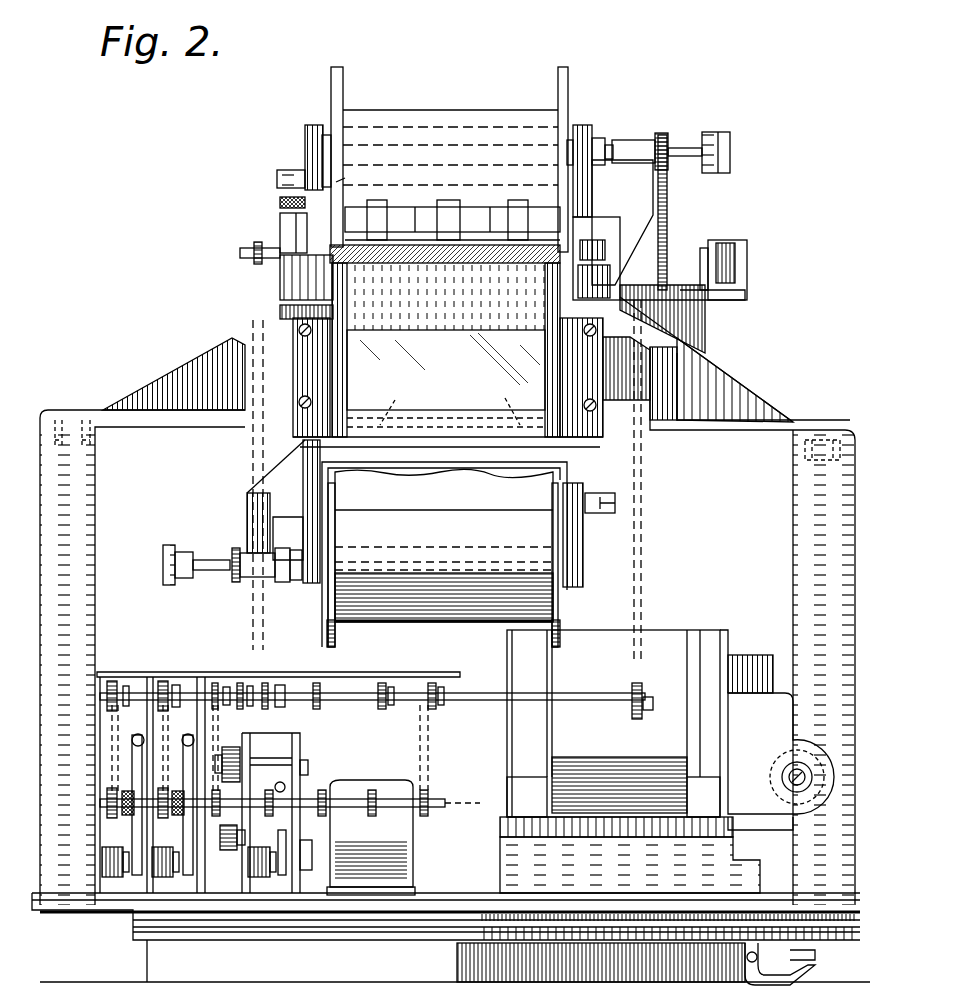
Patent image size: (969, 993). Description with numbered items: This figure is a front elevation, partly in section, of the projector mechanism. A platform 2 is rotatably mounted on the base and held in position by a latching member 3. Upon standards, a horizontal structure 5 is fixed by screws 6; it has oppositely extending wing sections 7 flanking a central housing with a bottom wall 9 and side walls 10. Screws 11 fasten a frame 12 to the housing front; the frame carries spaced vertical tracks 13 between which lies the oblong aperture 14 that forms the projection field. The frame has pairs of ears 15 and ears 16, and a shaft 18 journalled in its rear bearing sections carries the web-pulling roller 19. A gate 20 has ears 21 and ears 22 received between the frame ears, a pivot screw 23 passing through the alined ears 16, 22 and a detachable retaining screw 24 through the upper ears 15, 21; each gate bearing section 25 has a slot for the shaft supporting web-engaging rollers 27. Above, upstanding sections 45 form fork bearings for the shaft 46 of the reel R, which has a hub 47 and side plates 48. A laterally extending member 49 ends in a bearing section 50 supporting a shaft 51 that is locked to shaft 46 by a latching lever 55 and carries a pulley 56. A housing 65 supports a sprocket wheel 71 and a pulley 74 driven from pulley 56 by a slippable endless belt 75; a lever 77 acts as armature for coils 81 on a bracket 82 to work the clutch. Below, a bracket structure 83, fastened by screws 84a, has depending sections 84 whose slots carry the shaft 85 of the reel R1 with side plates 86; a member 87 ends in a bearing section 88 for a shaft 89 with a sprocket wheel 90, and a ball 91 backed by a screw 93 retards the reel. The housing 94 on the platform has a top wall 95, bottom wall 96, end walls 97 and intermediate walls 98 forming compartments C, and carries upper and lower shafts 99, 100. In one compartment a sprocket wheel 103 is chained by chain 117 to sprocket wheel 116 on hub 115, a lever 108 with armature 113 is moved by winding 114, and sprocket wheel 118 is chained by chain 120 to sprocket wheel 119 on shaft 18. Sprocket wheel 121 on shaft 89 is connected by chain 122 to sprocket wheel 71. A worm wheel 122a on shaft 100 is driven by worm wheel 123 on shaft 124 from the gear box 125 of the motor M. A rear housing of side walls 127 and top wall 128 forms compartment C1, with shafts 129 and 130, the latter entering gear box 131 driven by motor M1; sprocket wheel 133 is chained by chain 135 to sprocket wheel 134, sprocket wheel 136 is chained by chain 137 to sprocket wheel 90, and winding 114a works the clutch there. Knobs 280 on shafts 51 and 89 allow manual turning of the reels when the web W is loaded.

The platform 2 is at (44, 912).
The latching member 3 is at (795, 945).
The horizontal structure 5 is at (745, 371).
The screws 6 is at (88, 452).
The wing sections 7 is at (142, 410).
The bottom wall 9 is at (445, 428).
The side walls 10 is at (300, 411).
The screws 11 is at (304, 396).
The frame 12 is at (590, 440).
The vertical tracks 13 is at (333, 385).
The aperture or passage 14 is at (430, 330).
The ears 15 is at (282, 213).
The ears 16 is at (558, 318).
The horizontal shaft 18 is at (242, 254).
The web-pulling roller 19 is at (480, 265).
The gate 20 is at (342, 294).
The ears 21 is at (282, 262).
The ears 22 is at (614, 250).
The pivot screw 23 is at (612, 268).
The retaining screw 24 is at (278, 222).
The bearing section 25 is at (392, 202).
The web-engaging rollers 27 is at (445, 202).
The upstanding sections 45 is at (314, 126).
The shaft 46 is at (480, 128).
The hub 47 is at (415, 108).
The side plates 48 is at (345, 61).
The laterally extending member 49 is at (630, 190).
The bearing section 50 is at (640, 142).
The shaft 51 is at (705, 152).
The latching lever 55 is at (632, 142).
The pulley 56 is at (668, 150).
The housing 65 is at (708, 328).
The sprocket wheel 71 is at (626, 379).
The pulley 74 is at (690, 362).
The endless belt 75 is at (668, 192).
The lever 77 is at (690, 280).
The coils 81 is at (748, 250).
The bracket 82 is at (752, 296).
The bracket structure 83 is at (287, 459).
The depending sections 84 is at (307, 586).
The screws 84a is at (451, 403).
The shaft 85 is at (448, 562).
The side plates 86 is at (346, 647).
The laterally extending member 87 is at (246, 520).
The bearing section 88 is at (264, 600).
The shaft 89 is at (205, 552).
The sprocket wheel 90 is at (232, 548).
The metallic ball 91 is at (336, 182).
The screw 93 is at (280, 178).
The housing 94 is at (146, 659).
The top wall 95 is at (185, 632).
The bottom wall 96 is at (130, 898).
The end walls 97 is at (98, 740).
The intermediate vertical walls 98 is at (195, 650).
The upper horizontal shaft 99 is at (466, 692).
The lower horizontal shaft 100 is at (443, 807).
The sprocket wheel 103 is at (420, 793).
The lever 108 is at (318, 840).
The armature 113 is at (275, 882).
The electromagnetic winding 114 is at (106, 880).
The electromagnetic winding 114a is at (265, 880).
The hub 115 is at (432, 700).
The sprocket wheel 116 is at (388, 690).
The endless sprocket chain 117 is at (430, 752).
The sprocket wheel 118 is at (335, 690).
The sprocket wheel 119 is at (255, 245).
The endless sprocket chain 120 is at (250, 286).
The sprocket wheel 121 is at (632, 700).
The endless sprocket chain 122 is at (645, 572).
The worm wheel 122a is at (790, 832).
The worm wheel 123 is at (781, 753).
The shaft 124 is at (798, 768).
The gear box 125 is at (757, 656).
The side walls 127 is at (298, 890).
The top wall 128 is at (300, 742).
The upper shaft 129 is at (278, 748).
The lower shaft 130 is at (252, 885).
The gear box 131 is at (318, 852).
The sprocket wheel 133 is at (236, 810).
The sprocket wheel 134 is at (224, 752).
The endless sprocket chain 135 is at (226, 840).
The sprocket wheel 136 is at (231, 749).
The endless sprocket chain 137 is at (233, 602).
The knob 280 is at (732, 156).
The housing A is at (78, 578).
The compartments C is at (188, 888).
The compartment C1 is at (302, 750).
The electrical motor M is at (690, 630).
The electrical motor M1 is at (393, 837).
The reel R is at (580, 80).
The reel R1 is at (570, 608).
The web W is at (462, 476).